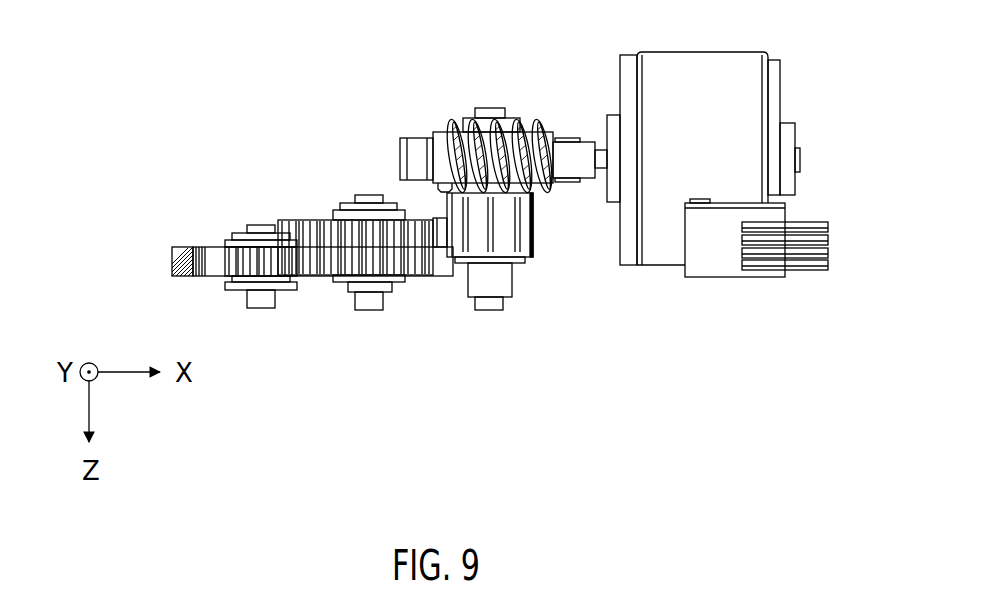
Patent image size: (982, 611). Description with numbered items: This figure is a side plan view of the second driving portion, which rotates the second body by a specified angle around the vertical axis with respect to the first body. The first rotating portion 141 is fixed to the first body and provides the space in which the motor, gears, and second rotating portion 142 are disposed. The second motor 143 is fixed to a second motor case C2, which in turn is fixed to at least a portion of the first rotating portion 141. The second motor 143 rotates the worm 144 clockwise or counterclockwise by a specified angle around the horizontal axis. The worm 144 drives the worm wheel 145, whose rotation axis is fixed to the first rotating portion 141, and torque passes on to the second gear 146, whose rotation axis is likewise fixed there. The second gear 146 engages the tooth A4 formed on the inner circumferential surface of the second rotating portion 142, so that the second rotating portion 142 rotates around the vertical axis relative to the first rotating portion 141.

The first rotating portion 141 is at (717, 285).
The second rotating portion 142 is at (172, 261).
The second motor 143 is at (222, 265).
The worm 144 is at (442, 135).
The worm wheel 145 is at (475, 232).
The second gear 146 is at (335, 242).
The tooth A4 is at (207, 250).
The second motor case C2 is at (812, 267).